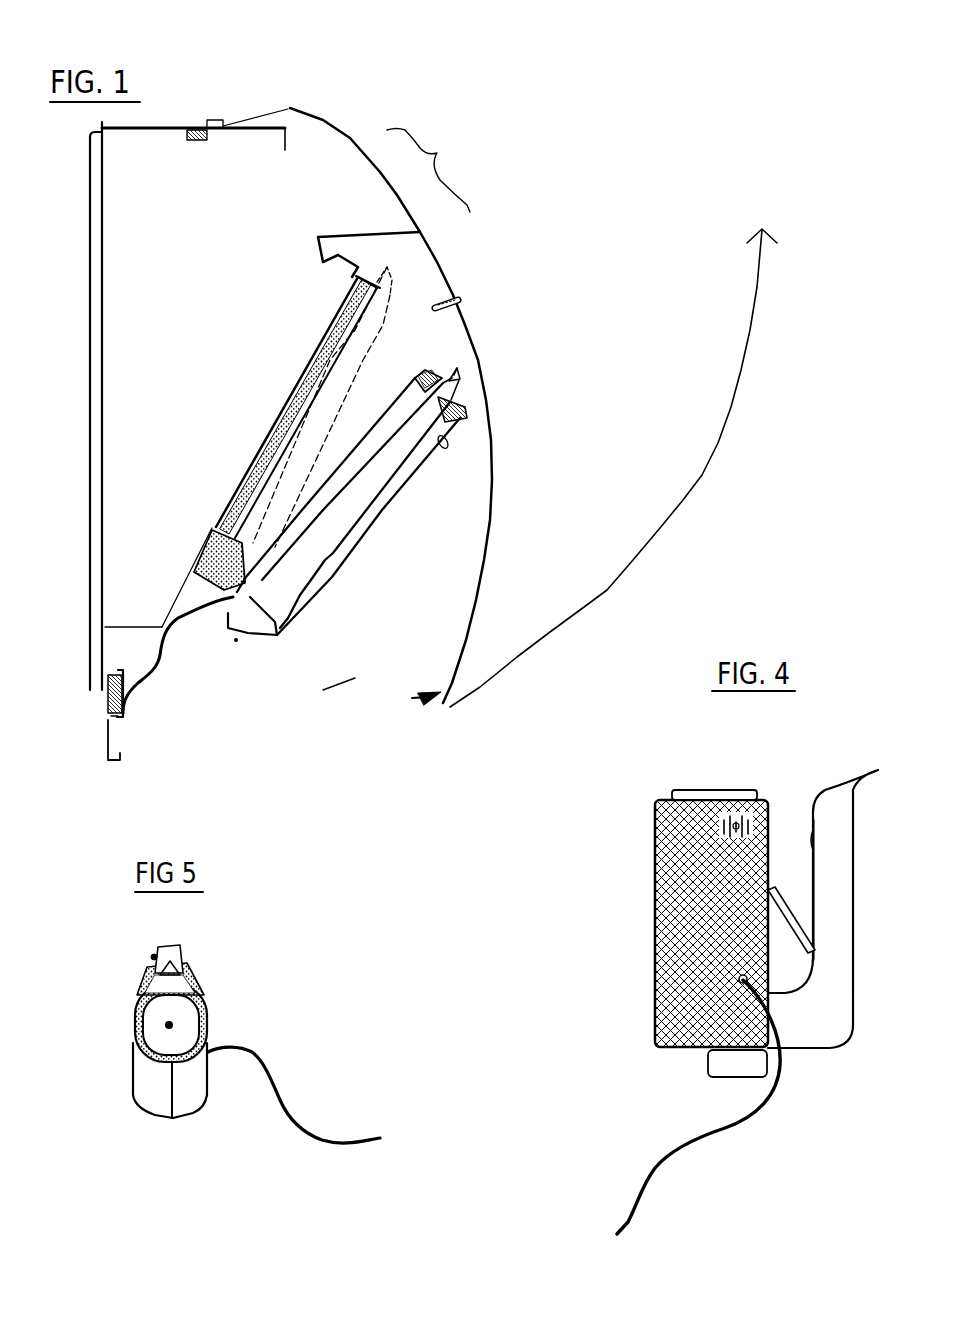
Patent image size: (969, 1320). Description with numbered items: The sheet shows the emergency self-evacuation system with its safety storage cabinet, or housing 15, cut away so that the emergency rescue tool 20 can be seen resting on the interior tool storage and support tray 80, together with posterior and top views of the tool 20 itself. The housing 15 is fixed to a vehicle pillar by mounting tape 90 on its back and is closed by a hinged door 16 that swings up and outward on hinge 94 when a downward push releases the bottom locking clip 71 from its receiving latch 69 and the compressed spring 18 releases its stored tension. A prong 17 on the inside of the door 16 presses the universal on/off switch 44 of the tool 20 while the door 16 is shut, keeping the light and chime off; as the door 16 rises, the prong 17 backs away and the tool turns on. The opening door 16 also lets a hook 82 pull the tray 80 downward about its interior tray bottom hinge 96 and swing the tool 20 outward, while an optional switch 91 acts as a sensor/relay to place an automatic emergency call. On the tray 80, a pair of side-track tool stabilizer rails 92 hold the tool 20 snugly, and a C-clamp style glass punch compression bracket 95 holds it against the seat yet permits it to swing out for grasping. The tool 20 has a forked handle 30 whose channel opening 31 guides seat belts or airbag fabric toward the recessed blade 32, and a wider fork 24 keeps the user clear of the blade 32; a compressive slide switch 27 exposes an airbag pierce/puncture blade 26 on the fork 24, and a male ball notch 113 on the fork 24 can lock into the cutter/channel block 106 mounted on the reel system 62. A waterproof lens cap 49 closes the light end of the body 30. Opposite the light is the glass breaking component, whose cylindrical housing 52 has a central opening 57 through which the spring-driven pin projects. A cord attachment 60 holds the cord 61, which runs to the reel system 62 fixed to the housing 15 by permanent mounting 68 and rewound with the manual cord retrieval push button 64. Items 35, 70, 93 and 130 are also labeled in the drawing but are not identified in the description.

In FIG. 1, the housing 15 is at (437, 153).
In FIG. 1, the door 16 is at (488, 558).
In FIG. 1, the prong 17 is at (441, 310).
In FIG. 1, the spring 18 is at (286, 148).
In FIG. 1, the emergency rescue tool 20 is at (344, 632).
In FIG. 1, the fork 24 is at (388, 460).
In FIG. 4, the fork 24 is at (860, 876).
In FIG. 1, the airbag pierce/puncture blade 26 is at (452, 364).
In FIG. 5, the airbag pierce/puncture blade 26 is at (193, 972).
In FIG. 1, the compressive slide switch 27 is at (435, 434).
In FIG. 5, the compressive slide switch 27 is at (150, 953).
In FIG. 1, the handle 30 is at (367, 529).
In FIG. 4, the handle 30 is at (684, 899).
In FIG. 4, the channel opening 31 is at (798, 815).
In FIG. 4, the blade 32 is at (779, 889).
In FIG. 4, the indicator 35 is at (712, 818).
In FIG. 1, the universal on/off switch 44 is at (444, 451).
In FIG. 4, the waterproof lens cap 49 is at (733, 787).
In FIG. 5, the waterproof lens cap 49 is at (128, 1025).
In FIG. 1, the housing 52 is at (270, 641).
In FIG. 4, the housing 52 is at (707, 1073).
In FIG. 1, the opening 57 is at (238, 645).
In FIG. 4, the cord attachment 60 is at (722, 989).
In FIG. 1, the cord 61 is at (167, 645).
In FIG. 4, the cord 61 is at (722, 1143).
In FIG. 5, the cord 61 is at (287, 1134).
In FIG. 1, the reel system 62 is at (109, 702).
In FIG. 1, the manual cord retrieval push button 64 is at (123, 757).
In FIG. 1, the permanent mounting 68 is at (104, 689).
In FIG. 1, the receiving latch 69 is at (120, 768).
In FIG. 1, the panel 70 is at (99, 311).
In FIG. 1, the bottom locking clip 71 is at (416, 706).
In FIG. 1, the interior tool storage and support tray 80 is at (314, 334).
In FIG. 1, the hook 82 is at (378, 228).
In FIG. 1, the mounting tape 90 is at (96, 381).
In FIG. 1, the switch 91 is at (186, 143).
In FIG. 1, the side-track tool stabilizer rails 92 is at (282, 389).
In FIG. 1, the tube top end 93 is at (344, 278).
In FIG. 1, the hinge 94 is at (213, 132).
In FIG. 1, the glass punch compression bracket 95 is at (208, 530).
In FIG. 1, the interior tray bottom hinge 96 is at (158, 632).
In FIG. 1, the cutter/channel block 106 is at (126, 705).
In FIG. 4, the male ball notch 113 is at (807, 840).
In FIG. 1, the grip ring 130 is at (444, 456).